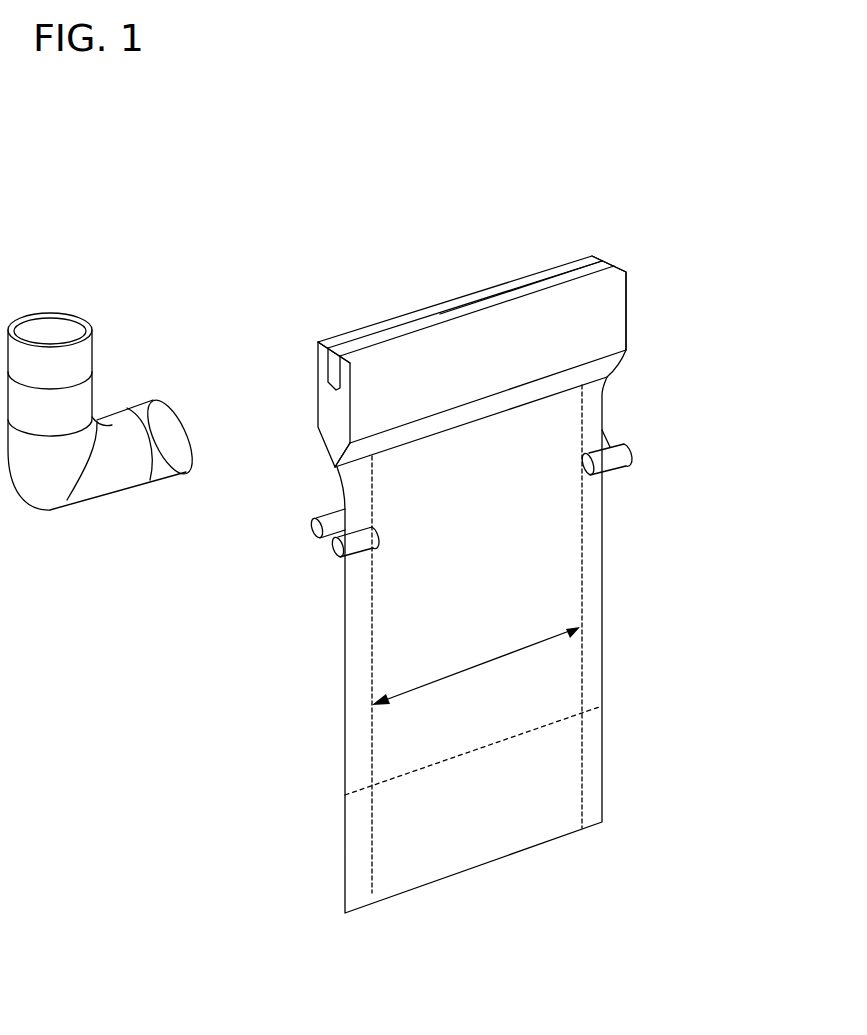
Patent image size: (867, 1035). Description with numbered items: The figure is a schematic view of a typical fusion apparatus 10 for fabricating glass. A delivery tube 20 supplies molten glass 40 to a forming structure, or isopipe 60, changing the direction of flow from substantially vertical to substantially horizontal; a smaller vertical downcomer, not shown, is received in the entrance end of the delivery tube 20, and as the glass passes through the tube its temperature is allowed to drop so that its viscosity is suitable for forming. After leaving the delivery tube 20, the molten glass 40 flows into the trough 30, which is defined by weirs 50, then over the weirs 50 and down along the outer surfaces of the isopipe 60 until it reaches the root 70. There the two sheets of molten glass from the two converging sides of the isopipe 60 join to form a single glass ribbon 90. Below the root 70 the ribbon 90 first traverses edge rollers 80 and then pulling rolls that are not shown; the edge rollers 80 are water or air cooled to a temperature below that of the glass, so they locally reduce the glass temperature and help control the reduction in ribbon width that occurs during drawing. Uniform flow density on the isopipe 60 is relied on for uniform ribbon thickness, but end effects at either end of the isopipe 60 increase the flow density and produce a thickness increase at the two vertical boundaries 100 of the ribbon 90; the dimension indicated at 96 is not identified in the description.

The fusion apparatus 10 is at (191, 239).
The delivery tube 20 is at (70, 504).
The trough 30 is at (425, 307).
The molten glass 40 is at (326, 383).
The weirs 50 is at (535, 297).
The forming structure (isopipe) 60 is at (627, 306).
The root 70 is at (337, 467).
The edge rollers 80 is at (333, 547).
The glass ribbon 90 is at (345, 660).
The bag width 96 is at (537, 642).
The vertical boundaries 100 is at (341, 755).